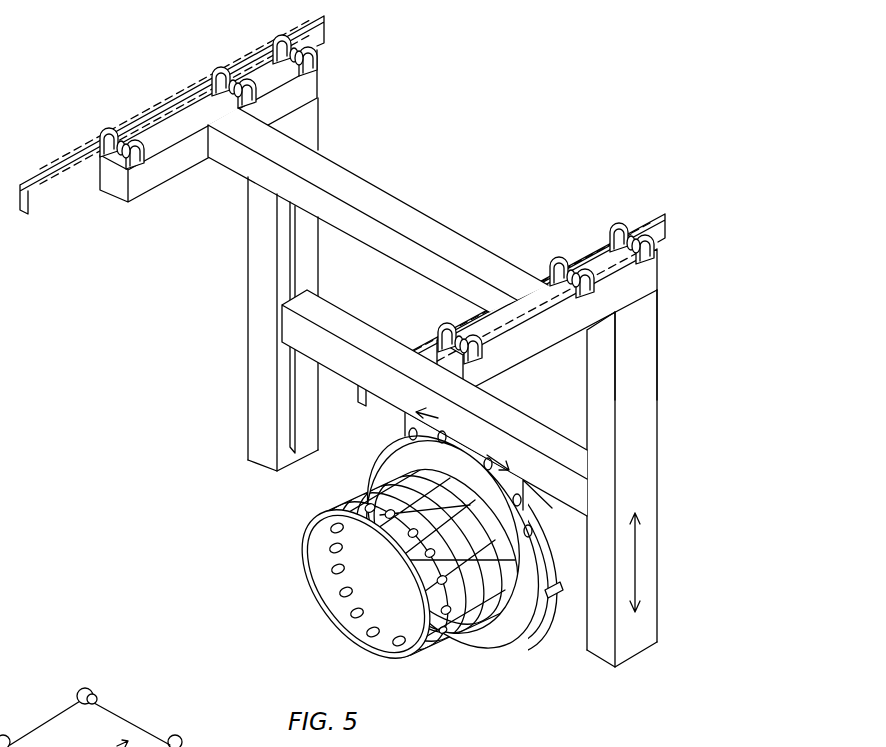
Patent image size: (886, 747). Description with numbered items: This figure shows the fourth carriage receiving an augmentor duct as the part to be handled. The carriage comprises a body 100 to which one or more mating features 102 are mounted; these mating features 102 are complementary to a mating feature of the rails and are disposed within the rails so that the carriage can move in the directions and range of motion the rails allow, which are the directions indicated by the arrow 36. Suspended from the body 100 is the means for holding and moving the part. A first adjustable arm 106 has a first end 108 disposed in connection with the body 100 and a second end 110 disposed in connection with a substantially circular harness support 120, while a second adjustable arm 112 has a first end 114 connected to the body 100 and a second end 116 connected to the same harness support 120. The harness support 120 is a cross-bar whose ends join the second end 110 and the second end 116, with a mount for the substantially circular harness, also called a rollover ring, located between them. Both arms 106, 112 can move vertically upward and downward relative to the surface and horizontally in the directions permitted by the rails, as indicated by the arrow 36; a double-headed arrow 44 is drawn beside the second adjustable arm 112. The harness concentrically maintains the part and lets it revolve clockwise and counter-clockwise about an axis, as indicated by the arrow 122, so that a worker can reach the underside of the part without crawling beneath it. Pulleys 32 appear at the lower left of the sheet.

The body 100 is at (677, 217).
The mating features 102 is at (118, 136).
The first adjustable arm 106 is at (247, 293).
The first end 108 is at (312, 124).
The second end 110 is at (255, 452).
The second adjustable arm 112 is at (645, 443).
The first end 114 is at (655, 335).
The second end 116 is at (640, 643).
The substantially circular harness support 120 is at (303, 337).
The arrow 122 is at (473, 438).
The vertical movement arrow 44 is at (636, 567).
The pulleys 32 is at (78, 693).
The arrow 36 is at (93, 746).